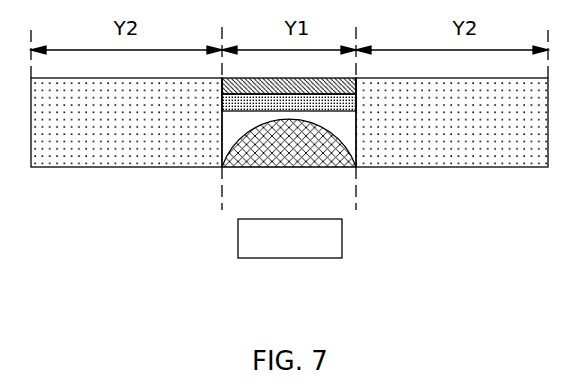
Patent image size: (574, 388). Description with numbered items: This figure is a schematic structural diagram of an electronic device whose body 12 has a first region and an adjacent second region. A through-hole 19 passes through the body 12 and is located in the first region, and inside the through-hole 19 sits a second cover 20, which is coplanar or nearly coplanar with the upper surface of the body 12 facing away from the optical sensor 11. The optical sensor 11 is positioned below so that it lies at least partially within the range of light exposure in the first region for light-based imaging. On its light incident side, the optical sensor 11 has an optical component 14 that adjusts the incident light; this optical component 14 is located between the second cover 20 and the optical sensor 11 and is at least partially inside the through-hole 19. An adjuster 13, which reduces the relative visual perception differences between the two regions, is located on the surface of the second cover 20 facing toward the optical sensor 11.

The optical sensor 11 is at (352, 269).
The body 12 is at (486, 160).
The adjuster 13 is at (260, 124).
The optical component 14 is at (315, 158).
The through-hole 19 is at (351, 128).
The second cover 20 is at (238, 91).